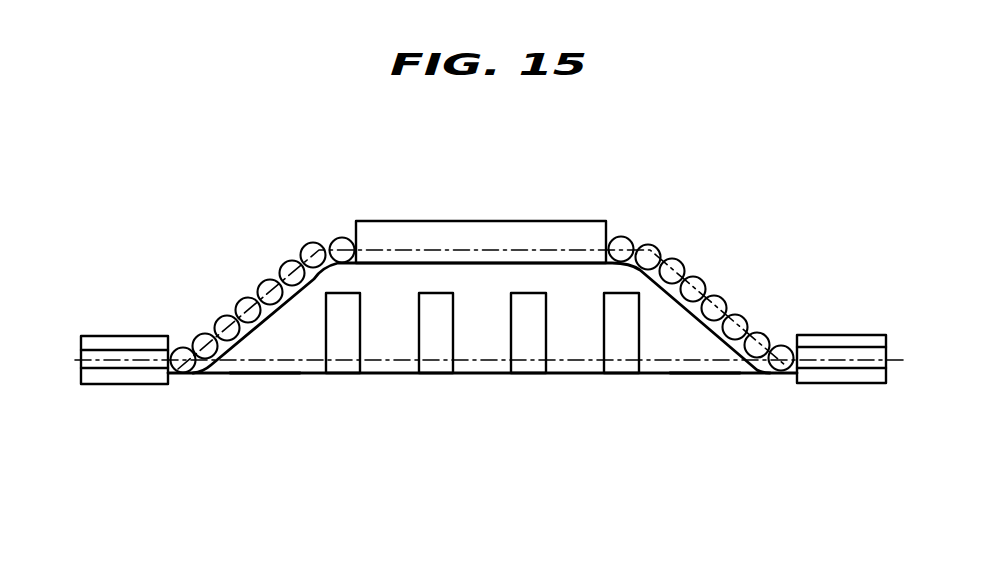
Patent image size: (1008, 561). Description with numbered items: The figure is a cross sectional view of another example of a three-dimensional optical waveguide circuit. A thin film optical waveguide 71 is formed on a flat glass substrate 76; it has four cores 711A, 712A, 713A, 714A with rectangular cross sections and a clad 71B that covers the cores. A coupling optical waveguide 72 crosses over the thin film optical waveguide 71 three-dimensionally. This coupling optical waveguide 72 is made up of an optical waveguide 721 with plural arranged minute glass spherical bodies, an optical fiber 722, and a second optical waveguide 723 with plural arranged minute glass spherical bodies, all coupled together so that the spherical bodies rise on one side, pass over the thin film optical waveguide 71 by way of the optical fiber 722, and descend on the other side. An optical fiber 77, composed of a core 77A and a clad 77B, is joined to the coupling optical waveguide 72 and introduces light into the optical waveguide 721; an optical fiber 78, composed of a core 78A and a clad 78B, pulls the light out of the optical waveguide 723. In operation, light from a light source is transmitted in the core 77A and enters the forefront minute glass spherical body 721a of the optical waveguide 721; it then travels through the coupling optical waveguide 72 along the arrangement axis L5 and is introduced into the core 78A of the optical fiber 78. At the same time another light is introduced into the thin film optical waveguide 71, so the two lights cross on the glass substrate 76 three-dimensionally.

The thin film optical waveguide 71 is at (387, 382).
The core 711A is at (338, 367).
The core 712A is at (437, 367).
The core 713A is at (529, 367).
The core 714A is at (621, 367).
The clad 71B is at (705, 368).
The flat glass substrate 76 is at (262, 368).
The coupling optical waveguide 72 is at (427, 219).
The optical fiber 722 is at (535, 228).
The optical waveguide 723 is at (682, 258).
The optical waveguide 721 is at (224, 316).
The forefront minute glass spherical body 721a is at (183, 347).
The arrangement axis L5 is at (313, 247).
The optical fiber 77 is at (112, 362).
The core 77A is at (100, 366).
The clad 77B is at (135, 380).
The optical fiber 78 is at (846, 359).
The core 78A is at (822, 366).
The clad 78B is at (868, 380).